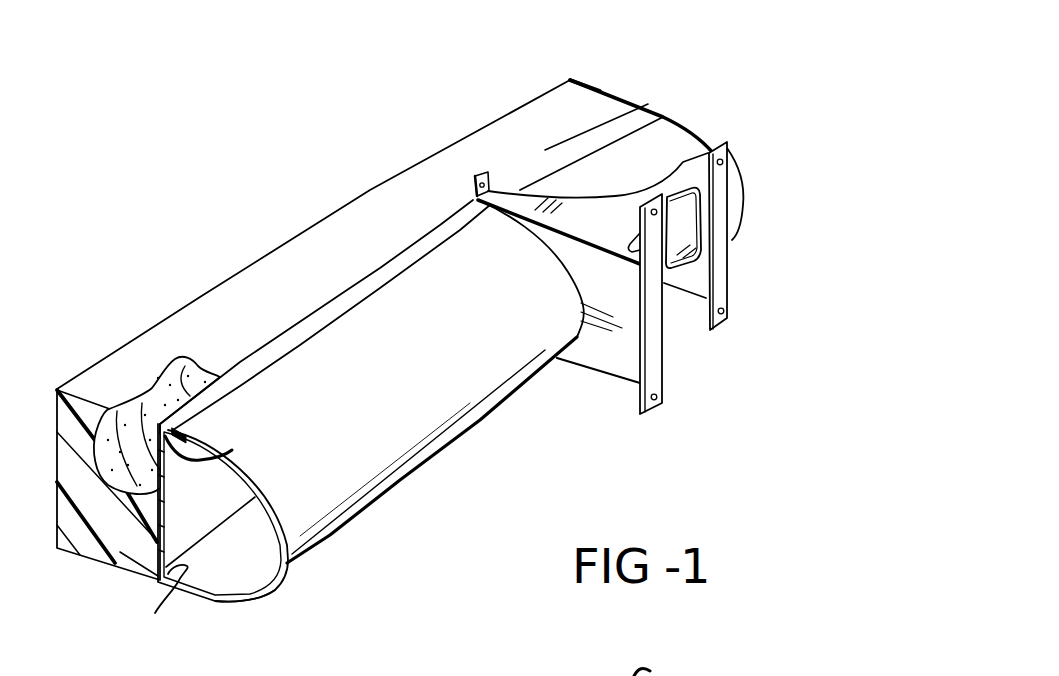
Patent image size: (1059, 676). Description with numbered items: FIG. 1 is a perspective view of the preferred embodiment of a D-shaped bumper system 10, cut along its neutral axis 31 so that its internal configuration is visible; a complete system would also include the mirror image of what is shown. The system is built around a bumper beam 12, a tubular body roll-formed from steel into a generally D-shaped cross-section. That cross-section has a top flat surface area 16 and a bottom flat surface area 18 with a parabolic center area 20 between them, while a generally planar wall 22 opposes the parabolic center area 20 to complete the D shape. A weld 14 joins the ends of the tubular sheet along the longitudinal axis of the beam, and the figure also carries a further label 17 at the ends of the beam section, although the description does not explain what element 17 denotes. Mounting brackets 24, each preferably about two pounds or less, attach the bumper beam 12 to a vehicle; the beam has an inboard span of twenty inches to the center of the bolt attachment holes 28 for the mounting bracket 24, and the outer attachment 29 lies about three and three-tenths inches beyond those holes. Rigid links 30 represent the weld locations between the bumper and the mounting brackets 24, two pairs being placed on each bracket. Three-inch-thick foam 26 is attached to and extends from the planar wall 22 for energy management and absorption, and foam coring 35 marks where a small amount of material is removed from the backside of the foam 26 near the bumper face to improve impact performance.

The D-shaped bumper system 10 is at (710, 31).
The bumper beam 12 is at (443, 437).
The weld 14 is at (310, 330).
The top flat surface area 16 is at (180, 428).
The seal end 17 is at (232, 450).
The bottom flat surface area 18 is at (222, 598).
The parabolic center area 20 is at (292, 554).
The generally planar wall 22 is at (212, 521).
The mounting bracket 24 is at (678, 286).
The foam 26 is at (321, 237).
The bolt attachment holes 28 is at (724, 160).
The outer attachment 29 is at (474, 176).
The rigid links 30 is at (726, 318).
The neutral axis 31 is at (110, 410).
The foam coring 35 is at (149, 392).